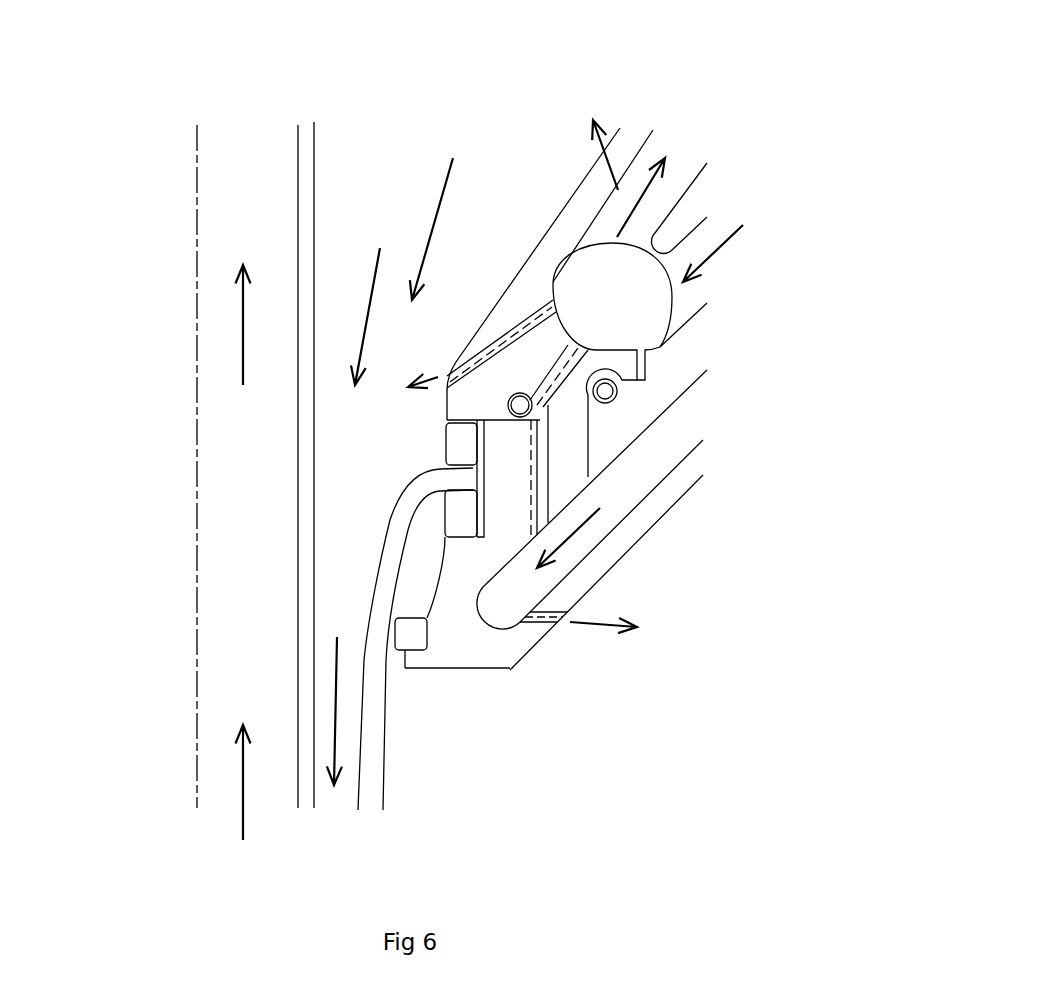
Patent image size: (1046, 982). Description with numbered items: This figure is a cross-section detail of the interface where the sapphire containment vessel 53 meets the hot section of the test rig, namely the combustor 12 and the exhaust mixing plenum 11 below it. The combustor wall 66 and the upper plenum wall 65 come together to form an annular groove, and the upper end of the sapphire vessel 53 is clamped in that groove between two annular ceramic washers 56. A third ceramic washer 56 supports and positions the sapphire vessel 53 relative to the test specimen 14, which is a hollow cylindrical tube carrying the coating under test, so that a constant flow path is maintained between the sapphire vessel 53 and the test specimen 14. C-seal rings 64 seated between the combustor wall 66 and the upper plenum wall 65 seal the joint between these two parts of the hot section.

The exhaust mixing plenum 11 is at (490, 725).
The combustor 12 is at (392, 179).
The test specimen 14 is at (298, 679).
The sapphire vessel 53 is at (370, 738).
The ceramic washers 56 is at (407, 630).
The C-seal rings 64 is at (610, 393).
The upper plenum wall 65 is at (623, 528).
The combustor wall 66 is at (630, 135).